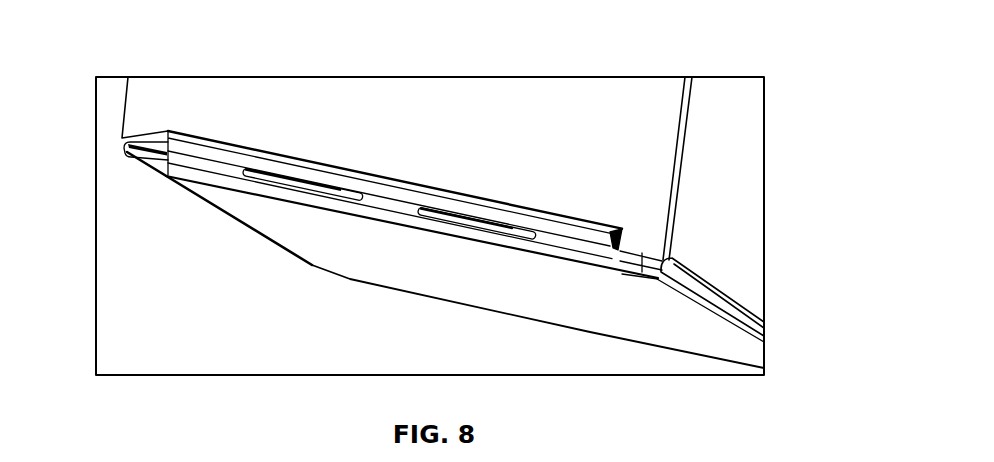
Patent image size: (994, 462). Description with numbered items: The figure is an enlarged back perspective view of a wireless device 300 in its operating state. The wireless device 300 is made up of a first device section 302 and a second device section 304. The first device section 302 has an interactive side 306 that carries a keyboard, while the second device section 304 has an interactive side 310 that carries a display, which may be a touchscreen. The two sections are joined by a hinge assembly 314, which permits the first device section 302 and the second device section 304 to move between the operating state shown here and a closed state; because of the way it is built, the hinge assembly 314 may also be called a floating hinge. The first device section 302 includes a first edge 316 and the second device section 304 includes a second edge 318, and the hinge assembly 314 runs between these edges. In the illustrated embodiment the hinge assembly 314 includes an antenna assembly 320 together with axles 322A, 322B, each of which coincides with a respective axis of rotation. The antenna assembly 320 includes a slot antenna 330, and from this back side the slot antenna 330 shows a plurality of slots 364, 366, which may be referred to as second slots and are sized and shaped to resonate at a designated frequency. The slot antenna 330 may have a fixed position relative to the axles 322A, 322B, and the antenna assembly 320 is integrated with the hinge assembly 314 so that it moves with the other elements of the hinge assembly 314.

The wireless device 300 is at (628, 46).
The first device section 302 is at (731, 260).
The second device section 304 is at (545, 125).
The interactive side 306 is at (696, 257).
The interactive side 310 is at (698, 149).
The hinge assembly 314 is at (379, 208).
The first edge 316 is at (553, 257).
The second edge 318 is at (318, 163).
The antenna assembly 320 is at (220, 167).
The axle 322A is at (616, 264).
The axle 322B is at (611, 229).
The slot antenna 330 is at (398, 211).
The slot 364 is at (463, 210).
The slot 366 is at (276, 172).